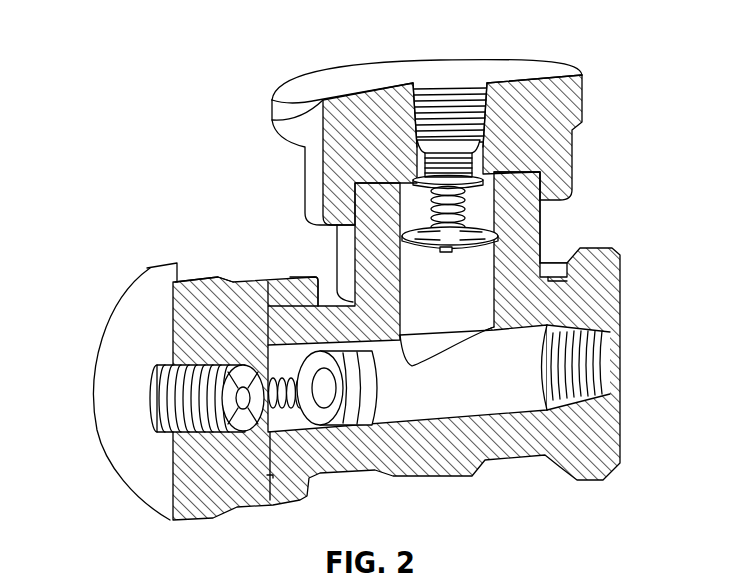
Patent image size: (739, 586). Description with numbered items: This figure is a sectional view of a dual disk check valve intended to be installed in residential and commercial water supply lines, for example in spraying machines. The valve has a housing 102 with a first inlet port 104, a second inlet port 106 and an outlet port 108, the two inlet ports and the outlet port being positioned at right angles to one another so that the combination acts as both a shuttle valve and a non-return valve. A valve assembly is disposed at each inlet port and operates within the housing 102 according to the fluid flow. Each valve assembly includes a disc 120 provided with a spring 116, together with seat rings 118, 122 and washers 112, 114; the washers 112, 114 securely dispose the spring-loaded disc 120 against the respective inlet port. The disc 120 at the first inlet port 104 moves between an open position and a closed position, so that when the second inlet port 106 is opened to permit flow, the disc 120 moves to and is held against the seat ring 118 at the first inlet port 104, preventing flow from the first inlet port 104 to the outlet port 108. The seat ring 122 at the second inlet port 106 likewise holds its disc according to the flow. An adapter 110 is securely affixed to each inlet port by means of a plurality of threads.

The housing 102 is at (587, 280).
The first inlet port 104 is at (180, 394).
The second inlet port 106 is at (447, 108).
The outlet port 108 is at (592, 357).
The adapter 110 is at (560, 100).
The washer 112 is at (300, 278).
The washer 114 is at (215, 285).
The spring 116 is at (470, 212).
The seat ring 118 is at (380, 473).
The disc 120 is at (420, 102).
The seat ring 122 is at (463, 150).